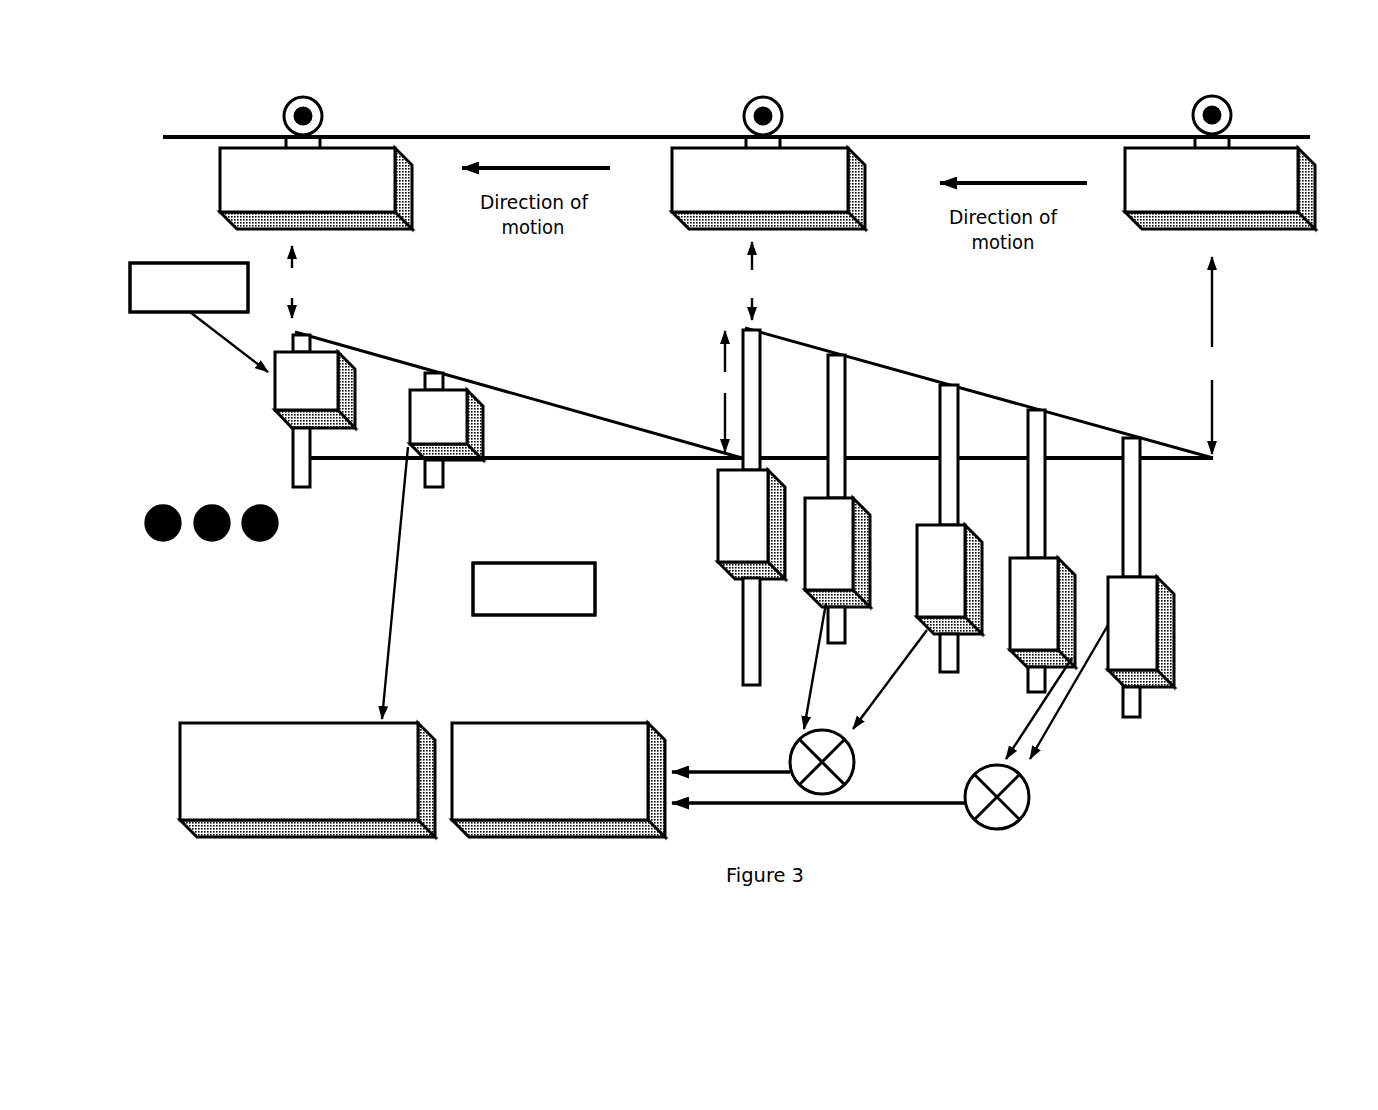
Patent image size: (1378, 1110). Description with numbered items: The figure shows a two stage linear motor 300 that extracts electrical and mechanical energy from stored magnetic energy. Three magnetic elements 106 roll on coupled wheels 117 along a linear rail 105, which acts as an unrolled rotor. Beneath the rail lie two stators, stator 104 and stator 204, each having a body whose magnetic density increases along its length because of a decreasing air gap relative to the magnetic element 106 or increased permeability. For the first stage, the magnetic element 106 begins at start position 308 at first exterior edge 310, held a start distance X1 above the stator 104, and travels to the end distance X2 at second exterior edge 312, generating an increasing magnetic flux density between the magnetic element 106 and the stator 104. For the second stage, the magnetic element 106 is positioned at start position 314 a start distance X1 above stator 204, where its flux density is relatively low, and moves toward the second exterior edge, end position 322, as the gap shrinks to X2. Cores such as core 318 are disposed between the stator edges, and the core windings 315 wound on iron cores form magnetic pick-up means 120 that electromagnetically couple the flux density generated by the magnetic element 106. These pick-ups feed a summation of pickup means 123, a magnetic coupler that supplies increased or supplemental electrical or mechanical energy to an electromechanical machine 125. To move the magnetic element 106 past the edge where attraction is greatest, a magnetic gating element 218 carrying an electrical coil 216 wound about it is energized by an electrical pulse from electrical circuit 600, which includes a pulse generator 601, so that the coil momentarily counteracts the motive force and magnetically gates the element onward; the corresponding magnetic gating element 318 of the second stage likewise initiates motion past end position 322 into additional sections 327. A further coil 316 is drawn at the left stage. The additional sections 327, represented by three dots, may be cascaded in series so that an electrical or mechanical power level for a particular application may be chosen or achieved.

The linear motor 300 is at (1045, 101).
The linear rail 105 is at (694, 126).
The wheel 117 is at (313, 101).
The magnetic element 106 is at (767, 188).
The stator 204 is at (527, 442).
The stator 104 is at (979, 422).
The end position 322 is at (368, 282).
The second exterior edge 312 is at (741, 325).
The start position 314 is at (738, 460).
The first exterior edge 310 is at (1216, 451).
The start position 308 is at (1218, 465).
The electrical circuit 600 is at (362, 439).
The pulse generator 601 is at (362, 439).
The coil 316 is at (272, 388).
The magnetic gating element 318 is at (321, 476).
The additional sections 327 is at (236, 466).
The electrical coil 216 is at (713, 524).
The magnetic gating element 218 is at (715, 612).
The core winding 315 is at (818, 519).
The magnetic pick-up means 120 is at (469, 488).
The electromechanical machine 125 is at (422, 642).
The summation of pickup means 123 is at (855, 762).